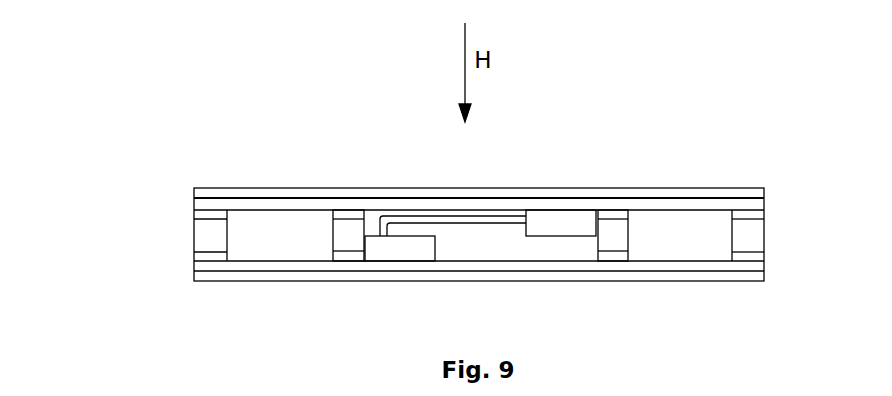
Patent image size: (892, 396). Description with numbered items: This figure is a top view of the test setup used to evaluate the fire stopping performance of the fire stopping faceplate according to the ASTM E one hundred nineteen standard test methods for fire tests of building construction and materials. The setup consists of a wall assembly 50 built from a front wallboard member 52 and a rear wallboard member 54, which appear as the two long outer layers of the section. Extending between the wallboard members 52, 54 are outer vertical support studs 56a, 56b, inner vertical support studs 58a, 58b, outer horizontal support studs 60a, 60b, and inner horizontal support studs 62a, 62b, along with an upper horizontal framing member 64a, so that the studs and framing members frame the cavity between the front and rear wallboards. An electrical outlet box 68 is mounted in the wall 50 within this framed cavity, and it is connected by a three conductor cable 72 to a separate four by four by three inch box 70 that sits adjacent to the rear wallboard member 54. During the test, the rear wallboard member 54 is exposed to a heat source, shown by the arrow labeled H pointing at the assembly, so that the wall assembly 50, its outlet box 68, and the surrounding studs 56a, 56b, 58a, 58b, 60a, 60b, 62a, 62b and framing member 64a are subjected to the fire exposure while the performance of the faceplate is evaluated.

The wall assembly 50 is at (137, 186).
The front wallboard member 52 is at (210, 280).
The rear wallboard member 54 is at (215, 192).
The outer vertical support stud 56a is at (200, 256).
The outer vertical support stud 56b is at (754, 256).
The inner vertical support stud 58a is at (347, 257).
The inner vertical support stud 58b is at (613, 258).
The outer horizontal support stud 60a is at (203, 238).
The outer horizontal support stud 60b is at (750, 238).
The inner horizontal support stud 62a is at (335, 241).
The inner horizontal support stud 62b is at (623, 241).
The upper horizontal framing member 64a is at (196, 203).
The electrical outlet box 68 is at (422, 250).
The box 70 is at (573, 225).
The three conductor cable 72 is at (467, 222).